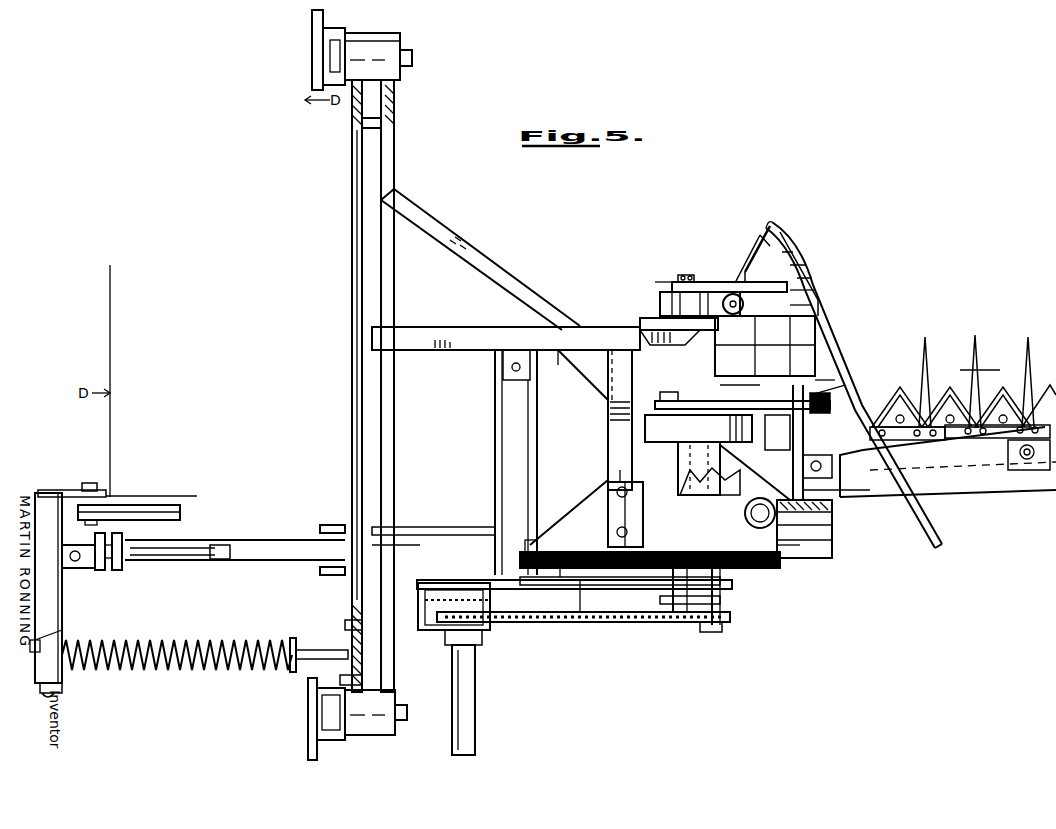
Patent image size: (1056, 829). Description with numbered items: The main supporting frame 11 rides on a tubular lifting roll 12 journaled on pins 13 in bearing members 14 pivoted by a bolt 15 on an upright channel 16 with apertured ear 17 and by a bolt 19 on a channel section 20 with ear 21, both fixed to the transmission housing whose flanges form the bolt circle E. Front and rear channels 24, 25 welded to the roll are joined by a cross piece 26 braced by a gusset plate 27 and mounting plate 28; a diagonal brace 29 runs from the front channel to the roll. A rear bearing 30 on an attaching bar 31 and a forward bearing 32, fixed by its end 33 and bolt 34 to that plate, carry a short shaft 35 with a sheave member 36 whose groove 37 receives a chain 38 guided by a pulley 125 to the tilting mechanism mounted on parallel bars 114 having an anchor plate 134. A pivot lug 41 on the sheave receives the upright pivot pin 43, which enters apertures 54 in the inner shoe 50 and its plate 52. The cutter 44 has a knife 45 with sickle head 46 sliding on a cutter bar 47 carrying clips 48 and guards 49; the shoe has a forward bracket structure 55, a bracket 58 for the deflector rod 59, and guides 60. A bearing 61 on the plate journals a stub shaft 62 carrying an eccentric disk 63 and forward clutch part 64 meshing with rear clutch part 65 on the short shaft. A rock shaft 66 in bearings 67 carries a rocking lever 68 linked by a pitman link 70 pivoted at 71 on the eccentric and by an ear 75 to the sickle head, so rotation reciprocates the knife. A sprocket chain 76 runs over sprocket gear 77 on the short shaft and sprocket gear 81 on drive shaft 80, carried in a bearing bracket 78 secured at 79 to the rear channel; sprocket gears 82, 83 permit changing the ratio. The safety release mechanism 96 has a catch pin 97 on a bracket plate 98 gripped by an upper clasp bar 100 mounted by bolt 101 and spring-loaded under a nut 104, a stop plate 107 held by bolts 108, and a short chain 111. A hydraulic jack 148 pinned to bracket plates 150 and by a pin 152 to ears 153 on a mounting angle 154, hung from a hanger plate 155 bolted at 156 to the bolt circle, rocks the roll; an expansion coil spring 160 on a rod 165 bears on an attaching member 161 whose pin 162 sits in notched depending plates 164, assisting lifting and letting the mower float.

The main supporting frame 11 is at (424, 338).
The tubular lifting roll 12 is at (394, 175).
The pins 13 is at (394, 101).
The bearing members 14 is at (400, 38).
The bolt 15 is at (407, 712).
The upright channel 16 is at (318, 738).
The apertured ear 17 is at (310, 715).
The bolt 19 is at (412, 62).
The upright channel section 20 is at (340, 30).
The apertured ear 21 is at (312, 62).
The front channel 24 is at (470, 338).
The rear channel 25 is at (430, 560).
The cross piece 26 is at (608, 430).
The gusset plate 27 is at (592, 385).
The mounting plate 28 is at (600, 497).
The diagonal brace 29 is at (498, 268).
The rear bearing 30 is at (720, 582).
The attaching bar 31 is at (628, 610).
The forward bearing 32 is at (755, 568).
The end of forward bearing 33 is at (625, 480).
The bolt 34 is at (655, 510).
The short shaft 35 is at (722, 630).
The sheave member 36 is at (640, 625).
The peripheral groove 37 is at (668, 625).
The chain 38 is at (605, 625).
The apertured pivot lug 41 is at (800, 555).
The upright pivot pin 43 is at (832, 545).
The cutter 44 is at (985, 360).
The knife 45 is at (960, 400).
The sickle head 46 is at (848, 408).
The cutter bar 47 is at (985, 495).
The clips 48 is at (1030, 470).
The guards 49 is at (1000, 372).
The inner shoe 50 is at (812, 268).
The plate 52 is at (832, 506).
The apertures 54 is at (832, 525).
The forward frame or bracket structure 55 is at (805, 345).
The bracket 58 is at (788, 242).
The deflector rod 59 is at (930, 538).
The guides 60 is at (832, 467).
The bearing 61 is at (678, 455).
The stub shaft 62 is at (715, 455).
The eccentric disk 63 is at (645, 428).
The forward clutch part 64 is at (722, 485).
The rear clutch part 65 is at (760, 498).
The rock shaft 66 is at (803, 436).
The bearings 67 is at (818, 488).
The rocking lever 68 is at (832, 392).
The pitman link 70 is at (702, 402).
The pivot connection 71 is at (668, 392).
The ear 75 is at (777, 432).
The sprocket chain 76 is at (562, 622).
The sprocket gear 77 is at (700, 625).
The bearing bracket 78 is at (420, 630).
The attachment 79 is at (470, 535).
The drive shaft 80 is at (475, 672).
The sprocket gear 81 is at (482, 635).
The sprocket gear 82 is at (720, 600).
The sprocket gear 83 is at (490, 600).
The safety release mechanism 96 is at (722, 280).
The catch pin 97 is at (700, 292).
The bracket plate 98 is at (640, 322).
The upper clasp bar 100 is at (805, 290).
The bolt 101 is at (812, 305).
The nut 104 is at (712, 335).
The stop plate 107 is at (765, 240).
The bolts 108 is at (682, 275).
The short length of chain 111 is at (678, 278).
The parallel bars 114 is at (520, 462).
The pulley 125 is at (540, 540).
The anchor plate 134 is at (503, 378).
The hydraulic jack 148 is at (250, 560).
The bracket plates 150 is at (320, 528).
The pin 152 is at (96, 570).
The ears 153 is at (70, 568).
The mounting angle 154 is at (35, 500).
The hanger plate 155 is at (52, 490).
The bolt 156 is at (91, 476).
The expansion coil spring 160 is at (205, 645).
The attaching member 161 is at (293, 640).
The pin 162 is at (345, 648).
The depending plates 164 is at (345, 625).
The rod 165 is at (52, 636).
The bolt circle E is at (112, 505).